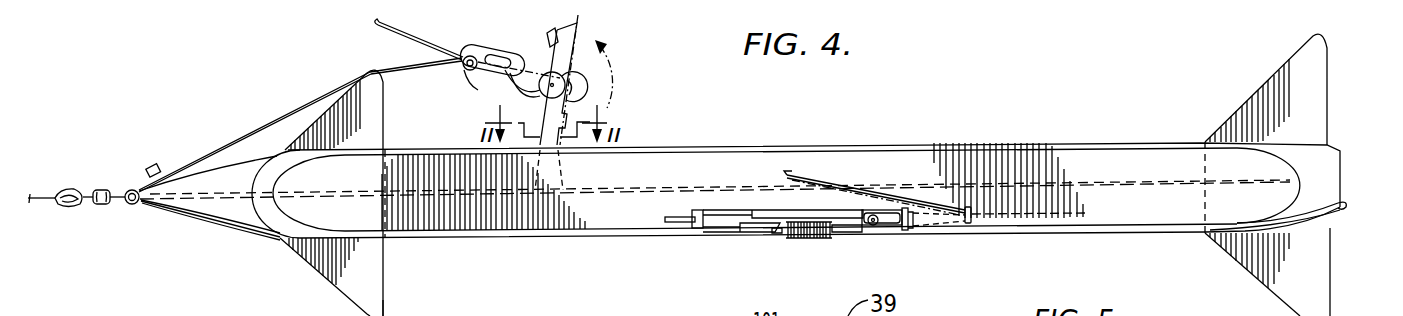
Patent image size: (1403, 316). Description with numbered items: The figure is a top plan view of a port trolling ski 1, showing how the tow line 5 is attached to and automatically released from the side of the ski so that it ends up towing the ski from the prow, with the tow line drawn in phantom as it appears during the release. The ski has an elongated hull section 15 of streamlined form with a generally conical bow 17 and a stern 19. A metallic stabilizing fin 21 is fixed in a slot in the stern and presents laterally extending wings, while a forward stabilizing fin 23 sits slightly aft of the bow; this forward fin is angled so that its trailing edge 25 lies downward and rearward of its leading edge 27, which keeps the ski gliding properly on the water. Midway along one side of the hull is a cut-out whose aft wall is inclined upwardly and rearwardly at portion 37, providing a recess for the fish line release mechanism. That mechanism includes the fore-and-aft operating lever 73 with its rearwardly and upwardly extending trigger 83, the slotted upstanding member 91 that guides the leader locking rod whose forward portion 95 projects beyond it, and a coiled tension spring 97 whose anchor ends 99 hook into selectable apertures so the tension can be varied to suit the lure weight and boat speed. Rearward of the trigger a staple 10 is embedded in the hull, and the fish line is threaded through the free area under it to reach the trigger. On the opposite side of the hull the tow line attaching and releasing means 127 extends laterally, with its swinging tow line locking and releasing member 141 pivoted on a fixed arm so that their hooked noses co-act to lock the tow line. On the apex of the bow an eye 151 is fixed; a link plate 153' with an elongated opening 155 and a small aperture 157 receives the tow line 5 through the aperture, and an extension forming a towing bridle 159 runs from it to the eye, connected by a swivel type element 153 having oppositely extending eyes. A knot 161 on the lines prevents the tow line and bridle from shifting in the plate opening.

The trolling ski 1 is at (840, 133).
The tow line 5 is at (405, 32).
The staple 10 is at (967, 223).
The hull section 15 is at (983, 142).
The bow 17 is at (227, 235).
The stern 19 is at (1332, 227).
The stabilizing fin 21 is at (1322, 125).
The forward stabilizing fin 23 is at (355, 292).
The trailing edge 25 is at (387, 278).
The leading edge 27 is at (313, 267).
The inclined aft wall portion 37 is at (910, 228).
The operating lever 73 is at (856, 219).
The trigger 83 is at (930, 175).
The upstanding member 91 is at (698, 212).
The forward portion of locking rod 95 is at (670, 217).
The coiled tension spring 97 is at (815, 236).
The anchor ends 99 is at (778, 232).
The tow line attaching and releasing means 127 is at (619, 77).
The swinging tow line locking and releasing member 141 is at (578, 30).
The eye 151 is at (128, 188).
The swivel type element 153 is at (105, 219).
The link plate 153' is at (509, 56).
The elongated opening 155 is at (505, 85).
The aperture 157 is at (468, 78).
The towing bridle extension 159 is at (49, 203).
The knot 161 is at (452, 78).